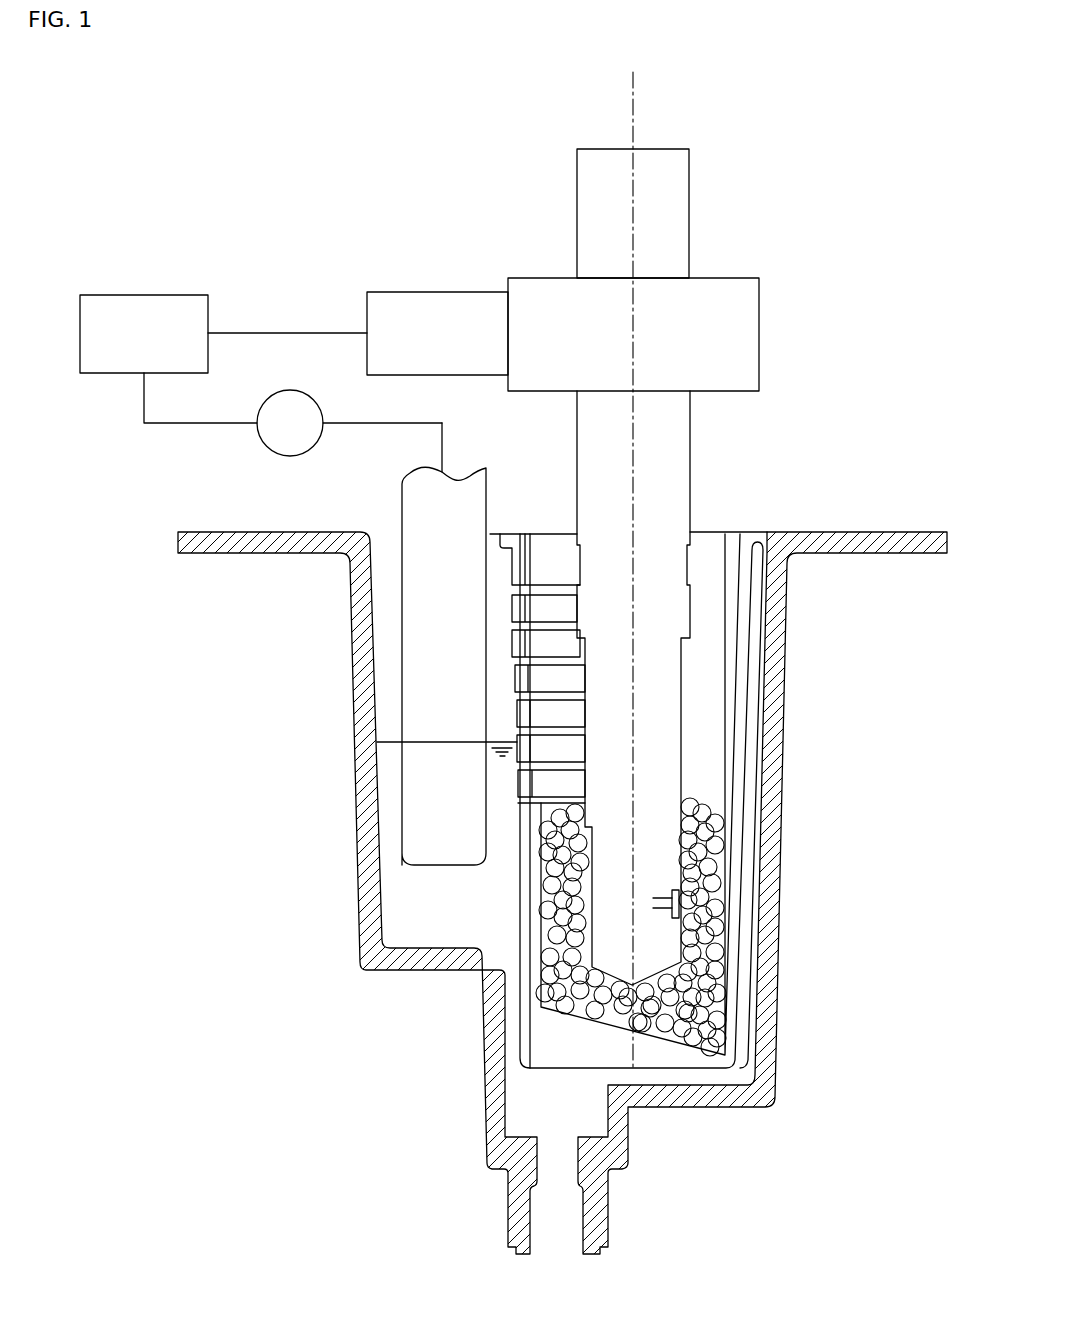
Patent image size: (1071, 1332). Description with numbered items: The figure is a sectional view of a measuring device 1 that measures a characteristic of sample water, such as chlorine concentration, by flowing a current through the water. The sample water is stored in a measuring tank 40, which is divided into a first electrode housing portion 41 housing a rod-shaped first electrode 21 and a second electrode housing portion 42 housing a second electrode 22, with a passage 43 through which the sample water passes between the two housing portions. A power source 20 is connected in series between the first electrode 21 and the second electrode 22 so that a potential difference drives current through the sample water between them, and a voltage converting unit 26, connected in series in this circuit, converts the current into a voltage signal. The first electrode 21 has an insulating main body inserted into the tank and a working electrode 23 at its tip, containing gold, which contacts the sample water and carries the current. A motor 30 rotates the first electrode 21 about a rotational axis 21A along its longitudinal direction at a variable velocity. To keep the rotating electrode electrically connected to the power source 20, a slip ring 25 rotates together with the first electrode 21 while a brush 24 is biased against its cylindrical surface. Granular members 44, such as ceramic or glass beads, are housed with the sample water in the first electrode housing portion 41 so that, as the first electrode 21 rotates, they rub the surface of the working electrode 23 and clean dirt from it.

The measuring device 1 is at (163, 150).
The power source 20 is at (143, 295).
The first electrode 21 is at (671, 457).
The rotational axis 21A is at (636, 113).
The second electrode 22 is at (427, 663).
The working electrode 23 is at (672, 890).
The brush 24 is at (428, 308).
The slip ring 25 is at (555, 298).
The voltage converting unit 26 is at (267, 448).
The motor 30 is at (671, 211).
The measuring tank 40 is at (841, 532).
The first electrode housing portion 41 is at (717, 695).
The second electrode housing portion 42 is at (422, 907).
The passage 43 is at (515, 697).
The granular members 44 is at (718, 993).